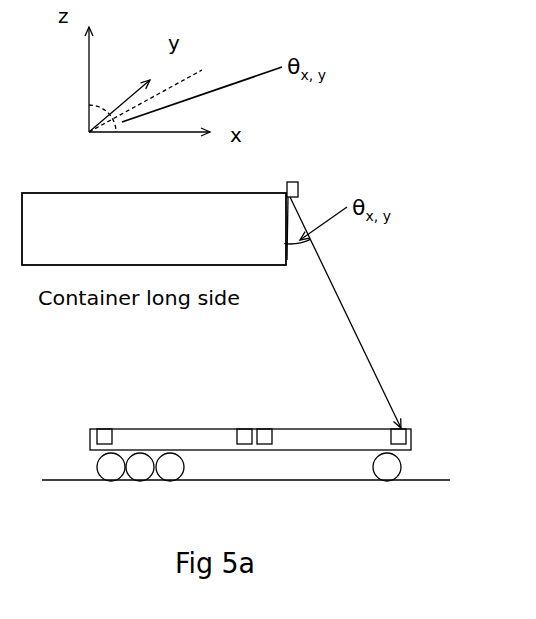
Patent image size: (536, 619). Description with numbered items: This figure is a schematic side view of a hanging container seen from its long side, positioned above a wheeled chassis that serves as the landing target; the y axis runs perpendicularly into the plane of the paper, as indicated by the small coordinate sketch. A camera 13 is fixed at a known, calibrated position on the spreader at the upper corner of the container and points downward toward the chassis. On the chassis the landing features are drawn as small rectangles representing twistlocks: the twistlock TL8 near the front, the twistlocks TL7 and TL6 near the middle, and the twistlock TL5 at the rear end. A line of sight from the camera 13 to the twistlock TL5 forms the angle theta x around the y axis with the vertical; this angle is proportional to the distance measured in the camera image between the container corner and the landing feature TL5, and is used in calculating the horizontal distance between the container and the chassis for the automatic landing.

The camera 13 is at (309, 187).
The twistlock TL5 is at (423, 437).
The twistlock TL6 is at (263, 447).
The twistlock TL7 is at (243, 449).
The twistlock TL8 is at (85, 429).